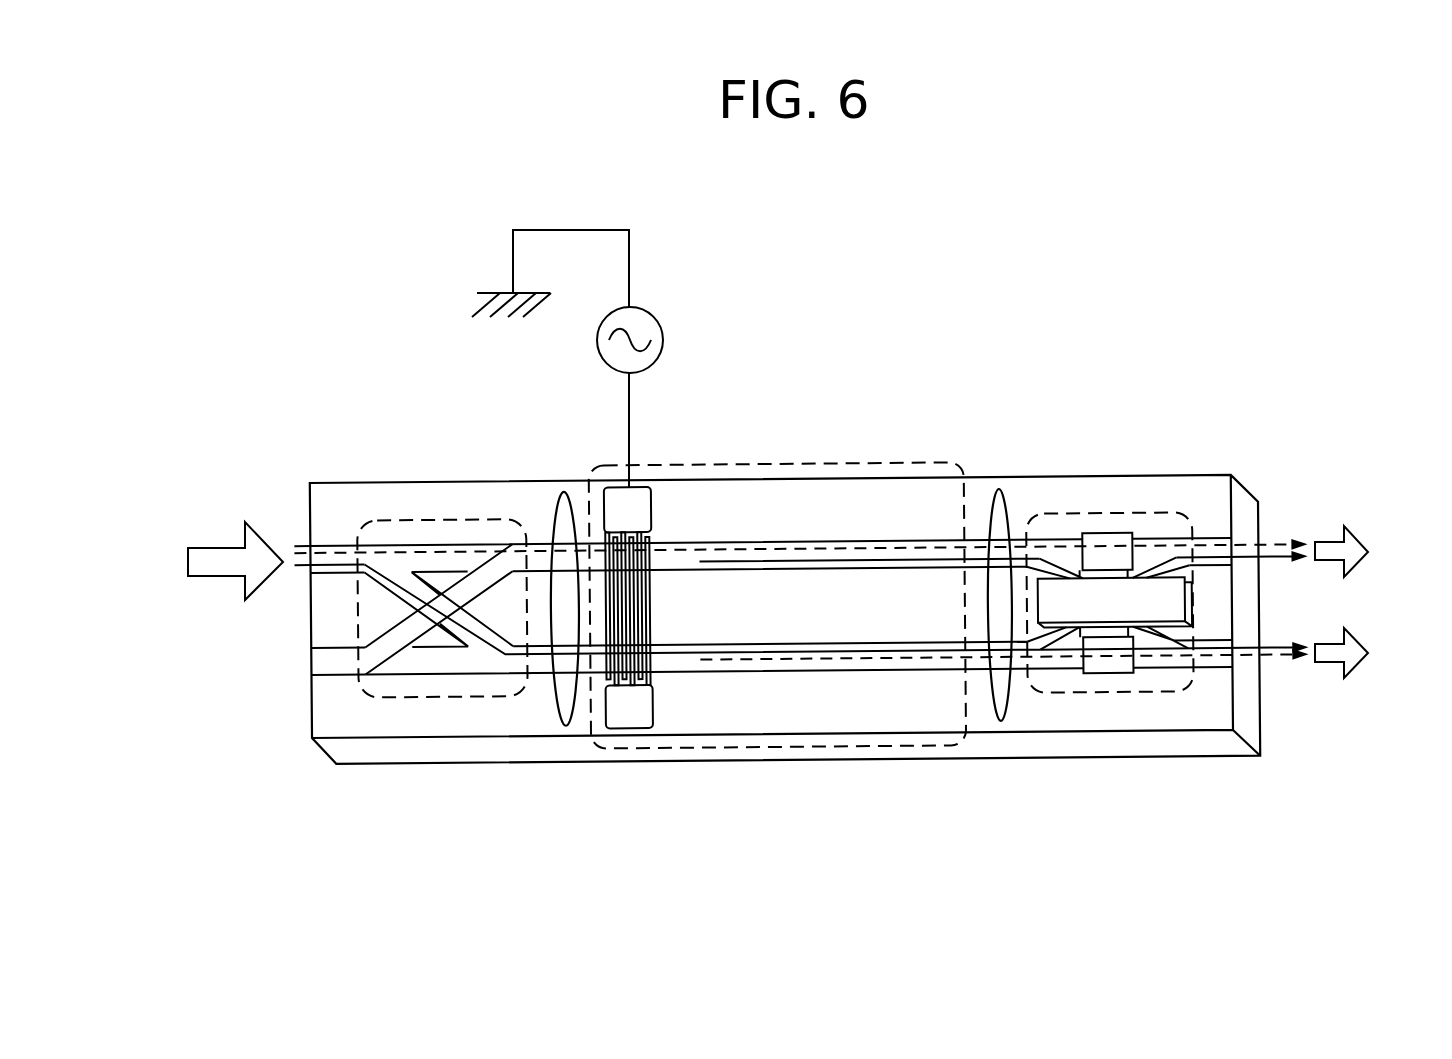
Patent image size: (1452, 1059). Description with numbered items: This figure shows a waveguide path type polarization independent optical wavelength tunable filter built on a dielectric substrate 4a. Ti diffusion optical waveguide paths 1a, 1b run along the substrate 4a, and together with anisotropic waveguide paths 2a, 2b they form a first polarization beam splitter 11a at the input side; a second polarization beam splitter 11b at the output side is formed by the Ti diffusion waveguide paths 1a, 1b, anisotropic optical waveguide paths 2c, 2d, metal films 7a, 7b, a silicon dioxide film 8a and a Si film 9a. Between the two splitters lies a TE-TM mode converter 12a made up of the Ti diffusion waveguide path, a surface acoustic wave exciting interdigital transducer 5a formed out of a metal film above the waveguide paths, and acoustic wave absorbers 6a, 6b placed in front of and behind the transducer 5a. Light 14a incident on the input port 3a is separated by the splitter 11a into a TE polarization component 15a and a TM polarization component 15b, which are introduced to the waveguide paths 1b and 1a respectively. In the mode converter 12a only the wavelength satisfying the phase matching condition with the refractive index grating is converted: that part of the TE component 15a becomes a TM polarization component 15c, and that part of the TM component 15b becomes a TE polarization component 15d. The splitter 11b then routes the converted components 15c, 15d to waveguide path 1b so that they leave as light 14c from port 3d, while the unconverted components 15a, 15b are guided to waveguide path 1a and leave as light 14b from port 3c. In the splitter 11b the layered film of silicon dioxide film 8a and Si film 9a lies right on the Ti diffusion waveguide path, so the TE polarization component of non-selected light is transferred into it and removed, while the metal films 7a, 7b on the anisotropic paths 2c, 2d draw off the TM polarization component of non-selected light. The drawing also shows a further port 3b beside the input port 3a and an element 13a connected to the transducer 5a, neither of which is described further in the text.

The Ti diffusion optical waveguide path 1a is at (311, 530).
The Ti diffusion optical waveguide path 1b is at (345, 683).
The anisotropic waveguide path 2a is at (425, 545).
The anisotropic waveguide path 2b is at (435, 690).
The anisotropic optical waveguide path 2c is at (1050, 545).
The anisotropic optical waveguide path 2d is at (1147, 690).
The input port 3a is at (302, 547).
The second input port 3b is at (318, 650).
The port 3c is at (1237, 540).
The port 3d is at (1212, 668).
The dielectric substrate 4a is at (583, 757).
The surface acoustic wave exciting interdigital transducer 5a is at (655, 503).
The acoustic wave absorber 6a is at (541, 488).
The acoustic wave absorber 6b is at (1005, 490).
The metal film 7a is at (1113, 533).
The metal film 7b is at (1105, 676).
The SiO2 film 8a is at (1193, 615).
The Si film 9a is at (1070, 625).
The polarization beam splitter 11a is at (465, 521).
The polarization beam splitter 11b is at (1180, 515).
The mode converter 12a is at (862, 466).
The RF signal source 13a is at (660, 313).
The light 14a is at (183, 582).
The light 14b is at (1362, 538).
The light 14c is at (1362, 665).
The TE polarization component 15a is at (302, 548).
The TM polarization component 15b is at (330, 573).
The TM polarization component 15c is at (912, 555).
The TE polarization component 15d is at (893, 668).